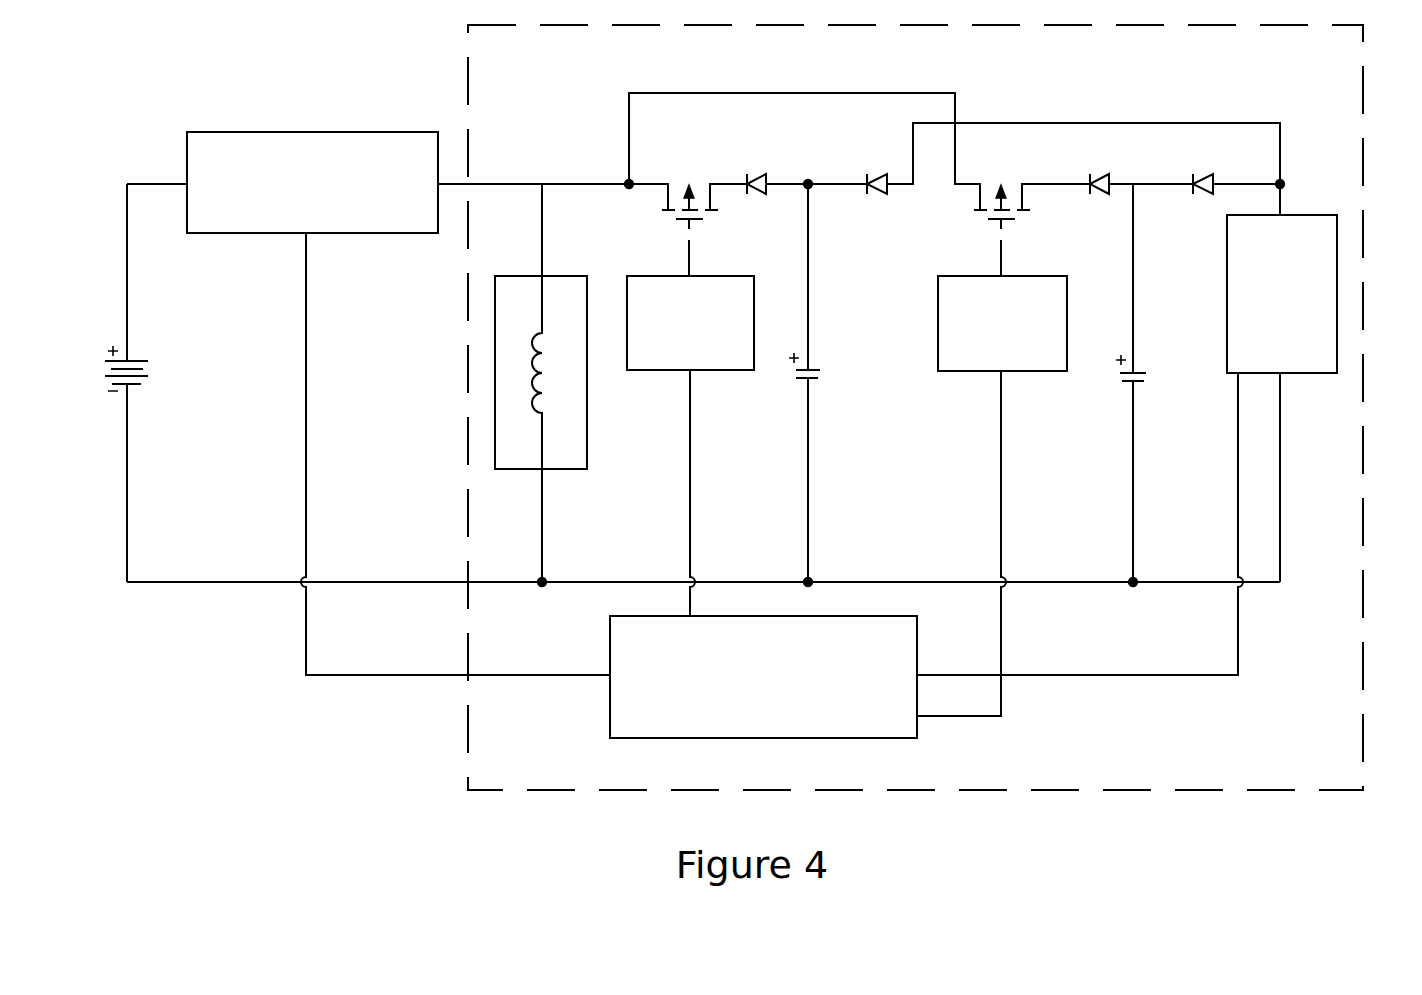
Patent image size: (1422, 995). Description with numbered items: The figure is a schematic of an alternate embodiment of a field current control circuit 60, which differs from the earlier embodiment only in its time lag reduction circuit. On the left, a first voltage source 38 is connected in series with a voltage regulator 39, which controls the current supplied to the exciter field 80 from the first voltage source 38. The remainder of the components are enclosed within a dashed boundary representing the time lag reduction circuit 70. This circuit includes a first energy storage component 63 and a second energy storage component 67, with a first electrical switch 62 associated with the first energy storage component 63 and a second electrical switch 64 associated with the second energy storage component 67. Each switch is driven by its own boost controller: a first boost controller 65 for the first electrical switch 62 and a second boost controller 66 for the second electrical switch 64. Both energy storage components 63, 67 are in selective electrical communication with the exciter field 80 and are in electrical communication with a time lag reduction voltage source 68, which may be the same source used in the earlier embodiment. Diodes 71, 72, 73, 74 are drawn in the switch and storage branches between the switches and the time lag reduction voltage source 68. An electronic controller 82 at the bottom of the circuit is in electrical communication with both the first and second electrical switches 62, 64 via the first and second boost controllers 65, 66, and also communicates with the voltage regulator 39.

The first voltage source 38 is at (98, 388).
The voltage regulator 39 is at (398, 140).
The field current control circuit 60 is at (132, 133).
The first electrical switch 62 is at (682, 160).
The first energy storage component 63 is at (825, 374).
The second electrical switch 64 is at (992, 170).
The first boost controller 65 is at (728, 364).
The second boost controller 66 is at (1043, 364).
The second energy storage component 67 is at (1150, 375).
The time lag reduction voltage source 68 is at (1328, 272).
The time lag reduction circuit 70 is at (1364, 390).
The first diode 71 is at (748, 160).
The second diode 72 is at (875, 160).
The third diode 73 is at (1098, 170).
The fourth diode 74 is at (1204, 170).
The exciter field 80 is at (567, 432).
The electronic controller 82 is at (618, 712).